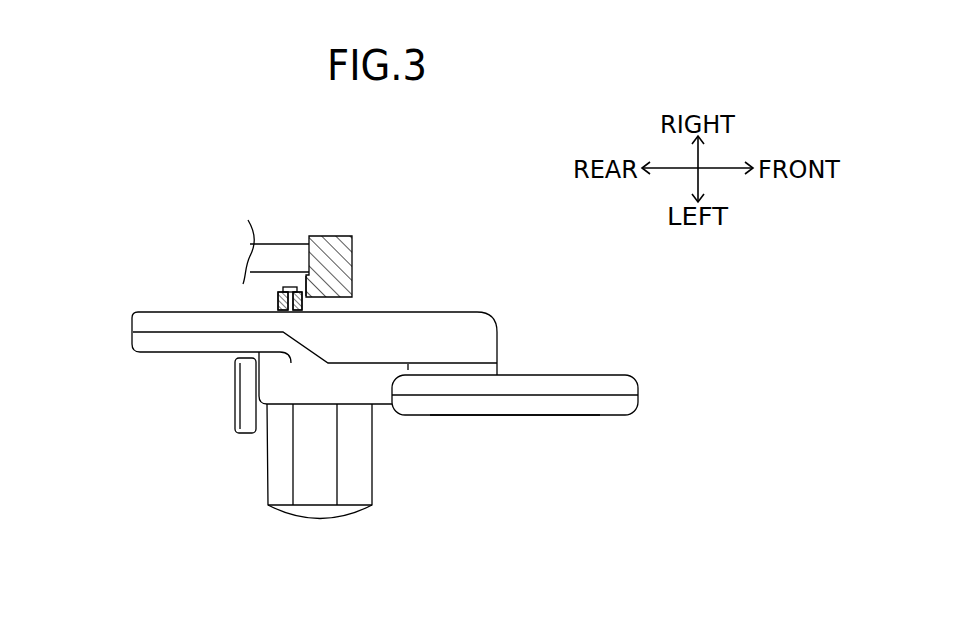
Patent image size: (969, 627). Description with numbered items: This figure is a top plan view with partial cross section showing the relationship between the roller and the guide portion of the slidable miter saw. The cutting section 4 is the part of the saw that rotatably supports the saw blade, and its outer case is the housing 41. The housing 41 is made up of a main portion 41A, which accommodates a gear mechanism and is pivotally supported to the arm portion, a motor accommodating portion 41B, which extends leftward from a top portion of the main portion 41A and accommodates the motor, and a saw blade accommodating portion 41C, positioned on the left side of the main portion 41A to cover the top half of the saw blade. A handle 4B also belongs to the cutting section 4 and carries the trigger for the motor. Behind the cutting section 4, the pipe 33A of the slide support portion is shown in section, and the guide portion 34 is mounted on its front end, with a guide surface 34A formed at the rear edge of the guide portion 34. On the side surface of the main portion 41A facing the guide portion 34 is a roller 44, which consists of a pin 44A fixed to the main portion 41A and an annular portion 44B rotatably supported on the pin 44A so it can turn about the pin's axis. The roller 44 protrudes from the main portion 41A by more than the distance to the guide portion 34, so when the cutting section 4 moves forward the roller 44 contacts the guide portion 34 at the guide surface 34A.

The cutting section 4 is at (530, 291).
The handle 4B is at (573, 388).
The pipe 33A is at (275, 252).
The guide portion 34 is at (348, 240).
The guide surface 34A is at (300, 281).
The housing 41 is at (255, 374).
The main portion 41A is at (378, 320).
The motor accommodating portion 41B is at (350, 477).
The saw blade accommodating portion 41C is at (488, 407).
The roller 44 is at (273, 302).
The pin 44A is at (283, 288).
The annular portion 44B is at (305, 304).